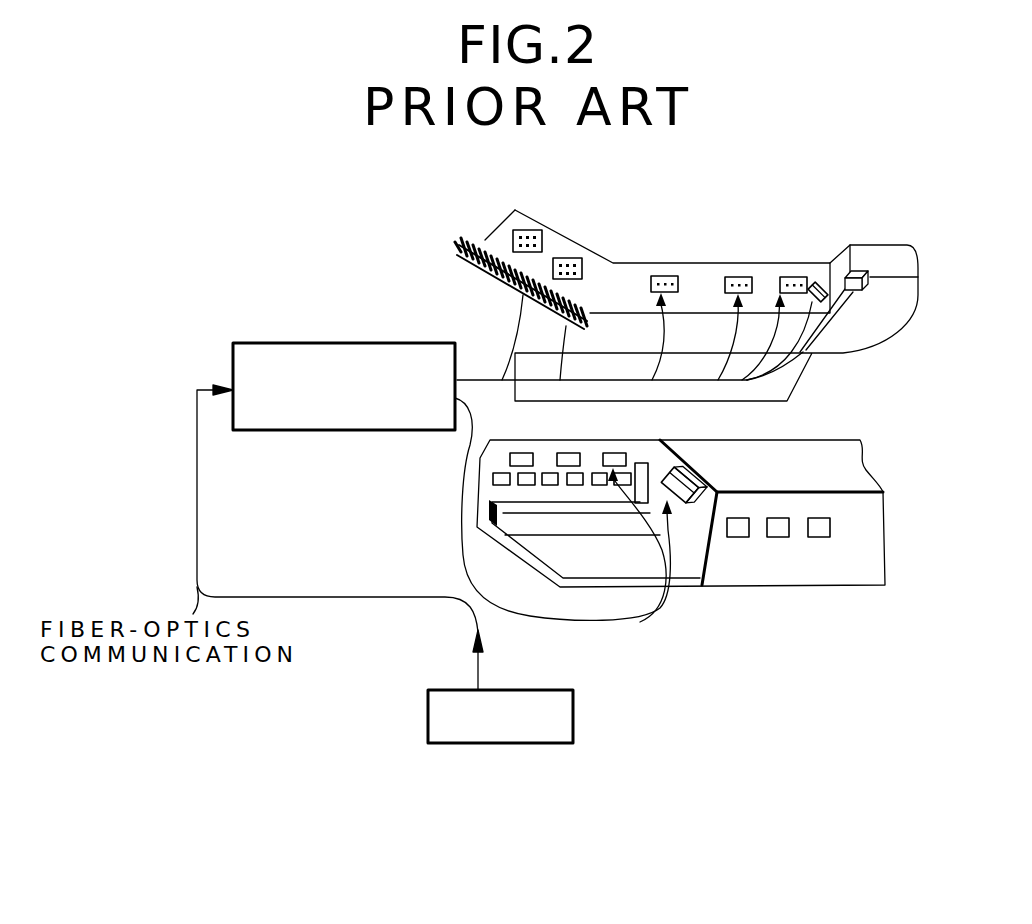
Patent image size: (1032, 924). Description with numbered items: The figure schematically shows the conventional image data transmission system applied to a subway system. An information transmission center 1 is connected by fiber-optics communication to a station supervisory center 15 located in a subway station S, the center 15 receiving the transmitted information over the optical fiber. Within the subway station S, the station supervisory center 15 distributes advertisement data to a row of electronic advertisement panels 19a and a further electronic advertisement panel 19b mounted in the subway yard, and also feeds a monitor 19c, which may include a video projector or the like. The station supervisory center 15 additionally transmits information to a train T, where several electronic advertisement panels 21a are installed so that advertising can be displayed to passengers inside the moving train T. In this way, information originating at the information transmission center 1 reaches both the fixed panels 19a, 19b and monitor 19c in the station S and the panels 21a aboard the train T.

The information transmission center 1 is at (574, 718).
The station supervisory center 15 is at (334, 343).
The electronic advertisement panel 19a is at (528, 230).
The electronic advertisement panel 19b is at (815, 284).
The monitor 19c is at (867, 283).
The electronic advertisement panel 21a is at (522, 453).
The subway station S is at (505, 315).
The train T is at (517, 558).